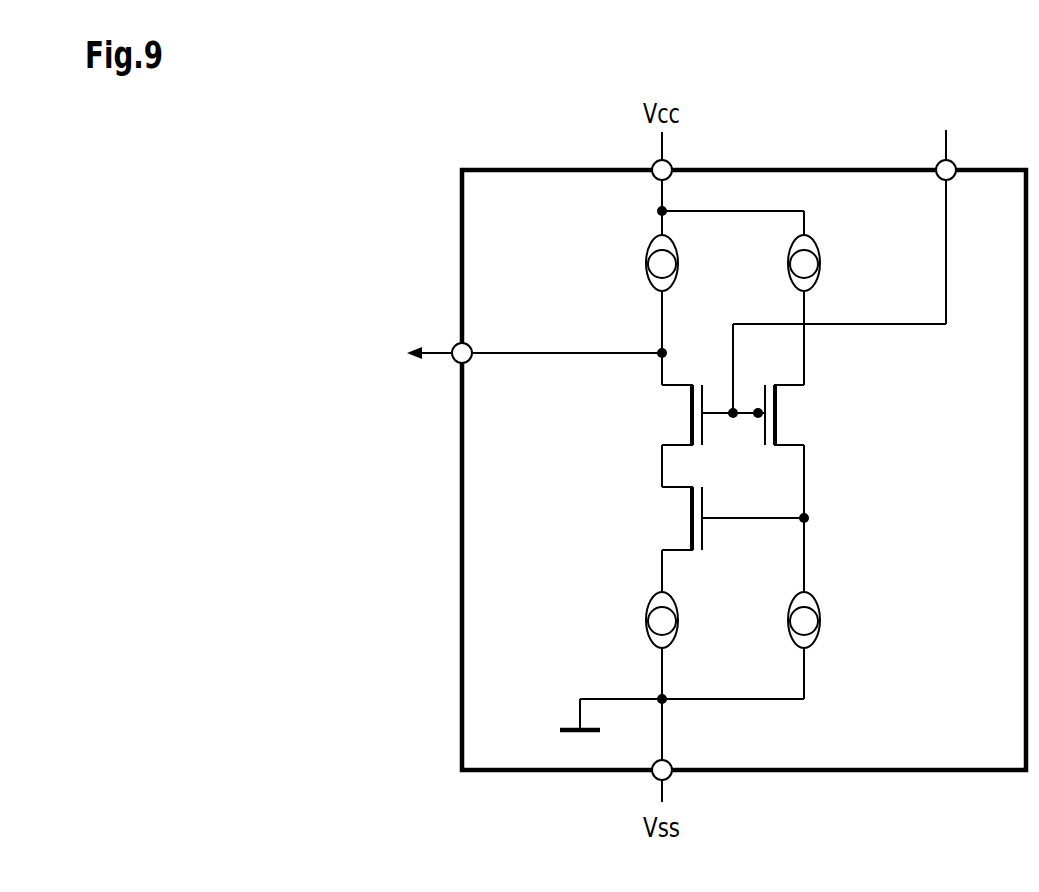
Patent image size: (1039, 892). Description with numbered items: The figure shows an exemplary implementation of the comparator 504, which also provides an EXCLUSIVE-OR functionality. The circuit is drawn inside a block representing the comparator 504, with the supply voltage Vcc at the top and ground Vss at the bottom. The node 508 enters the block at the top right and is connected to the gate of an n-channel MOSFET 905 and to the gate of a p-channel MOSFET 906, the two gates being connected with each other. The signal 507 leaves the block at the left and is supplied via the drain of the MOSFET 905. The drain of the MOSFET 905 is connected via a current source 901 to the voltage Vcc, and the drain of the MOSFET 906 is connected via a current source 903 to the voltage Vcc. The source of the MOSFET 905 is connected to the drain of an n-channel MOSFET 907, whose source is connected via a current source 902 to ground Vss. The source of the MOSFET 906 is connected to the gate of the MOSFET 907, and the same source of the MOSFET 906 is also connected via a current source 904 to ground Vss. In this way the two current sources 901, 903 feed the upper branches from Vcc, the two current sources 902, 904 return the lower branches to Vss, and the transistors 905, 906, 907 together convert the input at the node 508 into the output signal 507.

The comparator 504 is at (462, 201).
The signal 507 is at (433, 337).
The node 508 is at (945, 140).
The current source 901 is at (639, 263).
The current source 902 is at (639, 620).
The current source 903 is at (782, 263).
The current source 904 is at (783, 620).
The n-channel MOSFET 905 is at (673, 415).
The p-channel MOSFET 906 is at (795, 415).
The n-channel MOSFET 907 is at (673, 497).